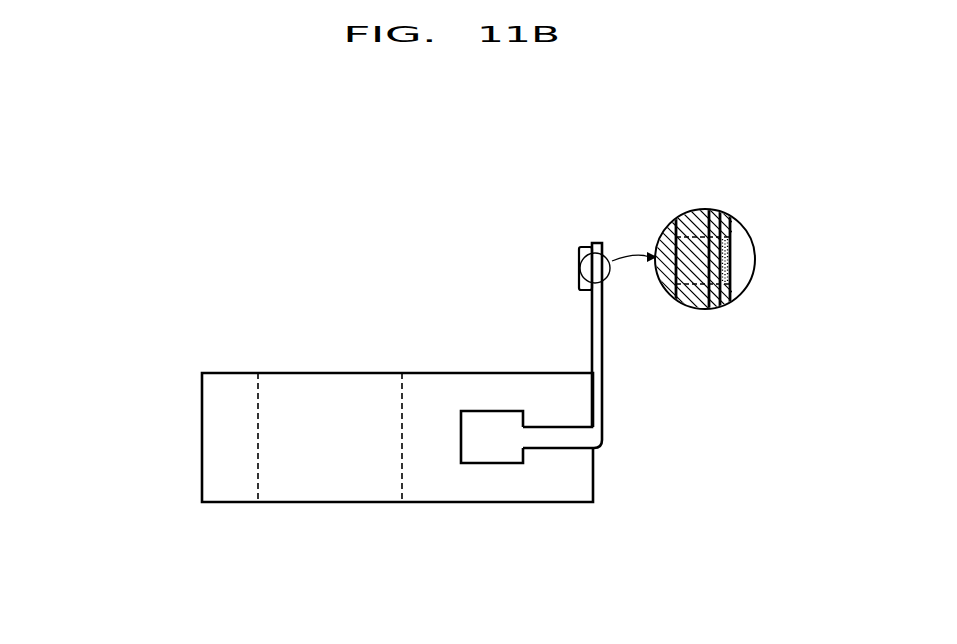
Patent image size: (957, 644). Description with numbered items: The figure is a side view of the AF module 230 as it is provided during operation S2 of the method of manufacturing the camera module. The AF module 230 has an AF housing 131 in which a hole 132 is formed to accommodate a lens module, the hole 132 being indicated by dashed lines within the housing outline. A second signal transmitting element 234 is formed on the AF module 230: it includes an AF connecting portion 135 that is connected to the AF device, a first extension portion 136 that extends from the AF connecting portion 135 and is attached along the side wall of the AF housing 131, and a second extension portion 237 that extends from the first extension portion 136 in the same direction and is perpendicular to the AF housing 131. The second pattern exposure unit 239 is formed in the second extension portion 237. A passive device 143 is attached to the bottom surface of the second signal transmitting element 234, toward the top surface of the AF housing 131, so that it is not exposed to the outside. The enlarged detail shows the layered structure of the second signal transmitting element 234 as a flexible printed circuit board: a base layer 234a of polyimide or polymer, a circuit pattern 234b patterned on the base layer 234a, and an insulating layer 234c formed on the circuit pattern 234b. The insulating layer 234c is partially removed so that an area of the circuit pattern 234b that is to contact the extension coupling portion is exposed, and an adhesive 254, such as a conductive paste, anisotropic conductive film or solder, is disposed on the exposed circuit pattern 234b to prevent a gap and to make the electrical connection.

The AF module 230 is at (174, 312).
The operation S2 is at (172, 431).
The AF housing 131 is at (432, 485).
The hole 132 is at (258, 477).
The AF connecting portion 135 is at (505, 455).
The first extension portion 136 is at (602, 392).
The passive device 143 is at (579, 250).
The second signal transmitting element 234 is at (673, 312).
The base layer 234a is at (700, 215).
The circuit pattern 234b is at (718, 216).
The insulating layer 234c is at (732, 230).
The second extension portion 237 is at (632, 340).
The second pattern exposure unit 239 is at (685, 258).
The adhesive 254 is at (733, 260).